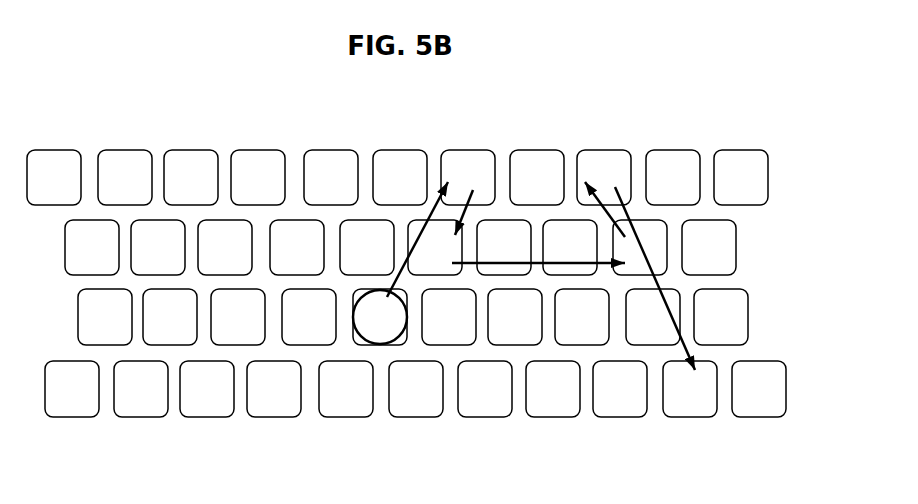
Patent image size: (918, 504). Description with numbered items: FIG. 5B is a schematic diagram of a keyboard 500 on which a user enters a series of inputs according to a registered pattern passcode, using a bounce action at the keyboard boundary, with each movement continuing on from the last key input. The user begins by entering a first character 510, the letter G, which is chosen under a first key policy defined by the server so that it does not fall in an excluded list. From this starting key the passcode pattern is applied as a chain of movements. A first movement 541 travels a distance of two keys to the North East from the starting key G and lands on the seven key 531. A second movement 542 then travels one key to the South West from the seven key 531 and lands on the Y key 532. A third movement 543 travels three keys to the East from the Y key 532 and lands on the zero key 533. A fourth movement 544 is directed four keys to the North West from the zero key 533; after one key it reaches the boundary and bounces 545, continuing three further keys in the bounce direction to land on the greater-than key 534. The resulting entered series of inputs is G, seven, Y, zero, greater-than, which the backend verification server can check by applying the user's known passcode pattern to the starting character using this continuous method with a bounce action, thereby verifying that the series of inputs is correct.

The keyboard 500 is at (133, 123).
The first character 510 is at (385, 345).
The key 7 531 is at (443, 153).
The key Y 532 is at (430, 276).
The key 0 533 is at (627, 277).
The key 534 is at (710, 413).
The first movement 541 is at (397, 292).
The second movement 542 is at (466, 208).
The third movement 543 is at (540, 265).
The fourth movement 544 is at (596, 188).
The bounce 545 is at (628, 210).